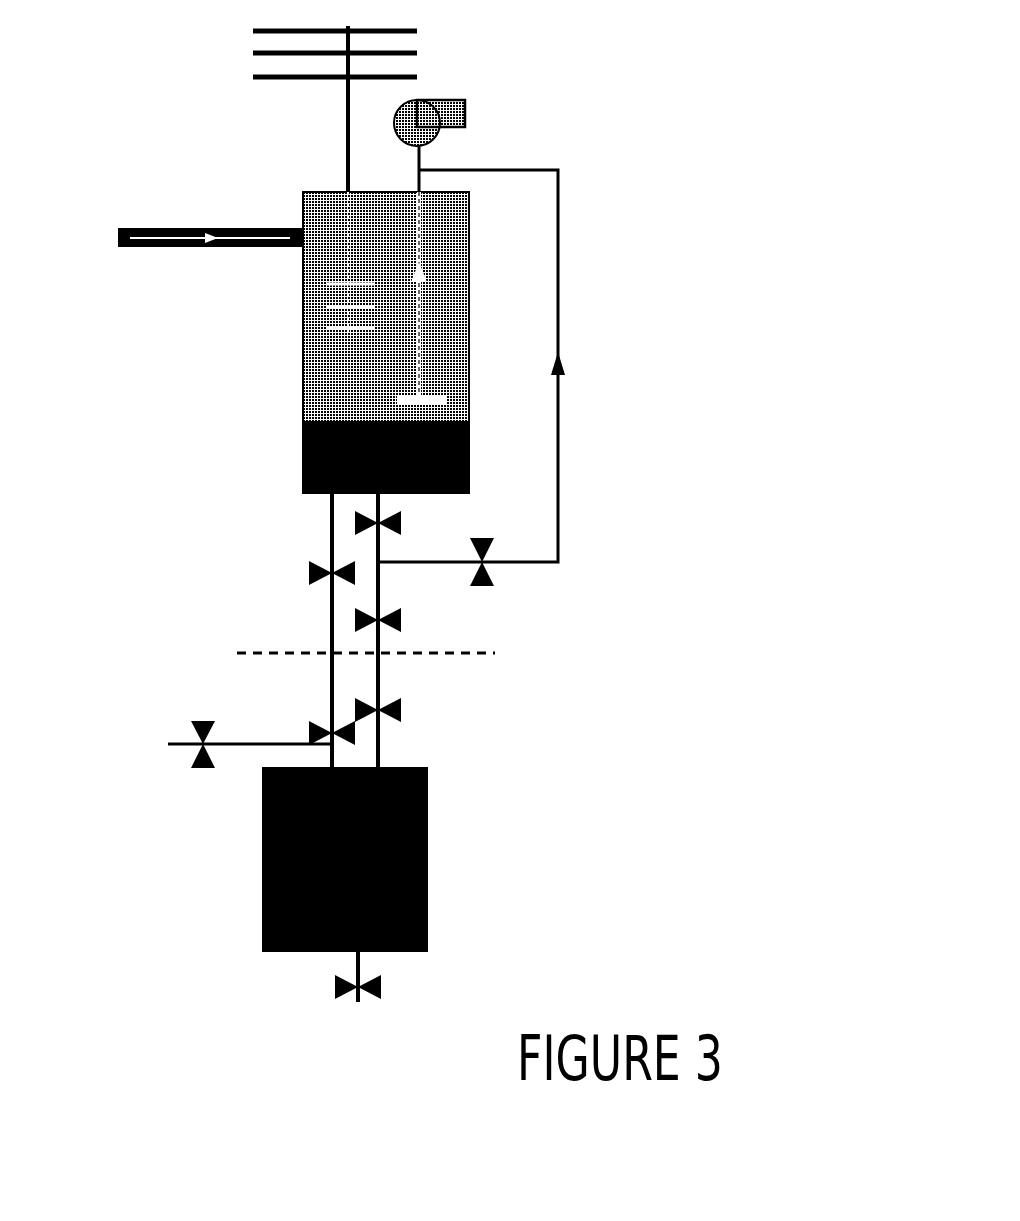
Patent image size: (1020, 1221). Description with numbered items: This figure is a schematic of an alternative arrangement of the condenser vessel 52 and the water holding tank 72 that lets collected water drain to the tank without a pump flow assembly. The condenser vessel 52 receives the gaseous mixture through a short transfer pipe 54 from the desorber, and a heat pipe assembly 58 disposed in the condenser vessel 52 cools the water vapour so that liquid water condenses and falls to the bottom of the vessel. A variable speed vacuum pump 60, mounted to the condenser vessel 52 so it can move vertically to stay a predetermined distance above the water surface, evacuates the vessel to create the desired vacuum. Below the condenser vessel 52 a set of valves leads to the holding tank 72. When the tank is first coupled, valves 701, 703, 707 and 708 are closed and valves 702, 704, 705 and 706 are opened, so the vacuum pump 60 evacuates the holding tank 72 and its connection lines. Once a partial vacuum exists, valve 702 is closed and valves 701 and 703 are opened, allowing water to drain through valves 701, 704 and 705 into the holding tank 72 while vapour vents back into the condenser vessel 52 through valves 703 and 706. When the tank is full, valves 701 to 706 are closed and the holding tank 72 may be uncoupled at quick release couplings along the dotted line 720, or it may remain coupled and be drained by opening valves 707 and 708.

The condenser vessel 52 is at (485, 278).
The transfer pipe 54 is at (138, 226).
The heat pipe assembly 58 is at (232, 78).
The variable speed vacuum pump 60 is at (488, 120).
The water holding tank 72 is at (452, 855).
The valve 701 is at (335, 514).
The valve 702 is at (445, 538).
The valve 703 is at (285, 586).
The valve 704 is at (335, 631).
The valve 705 is at (333, 698).
The valve 706 is at (290, 723).
The valve 707 is at (172, 769).
The valve 708 is at (318, 967).
The dotted line 720 is at (462, 651).